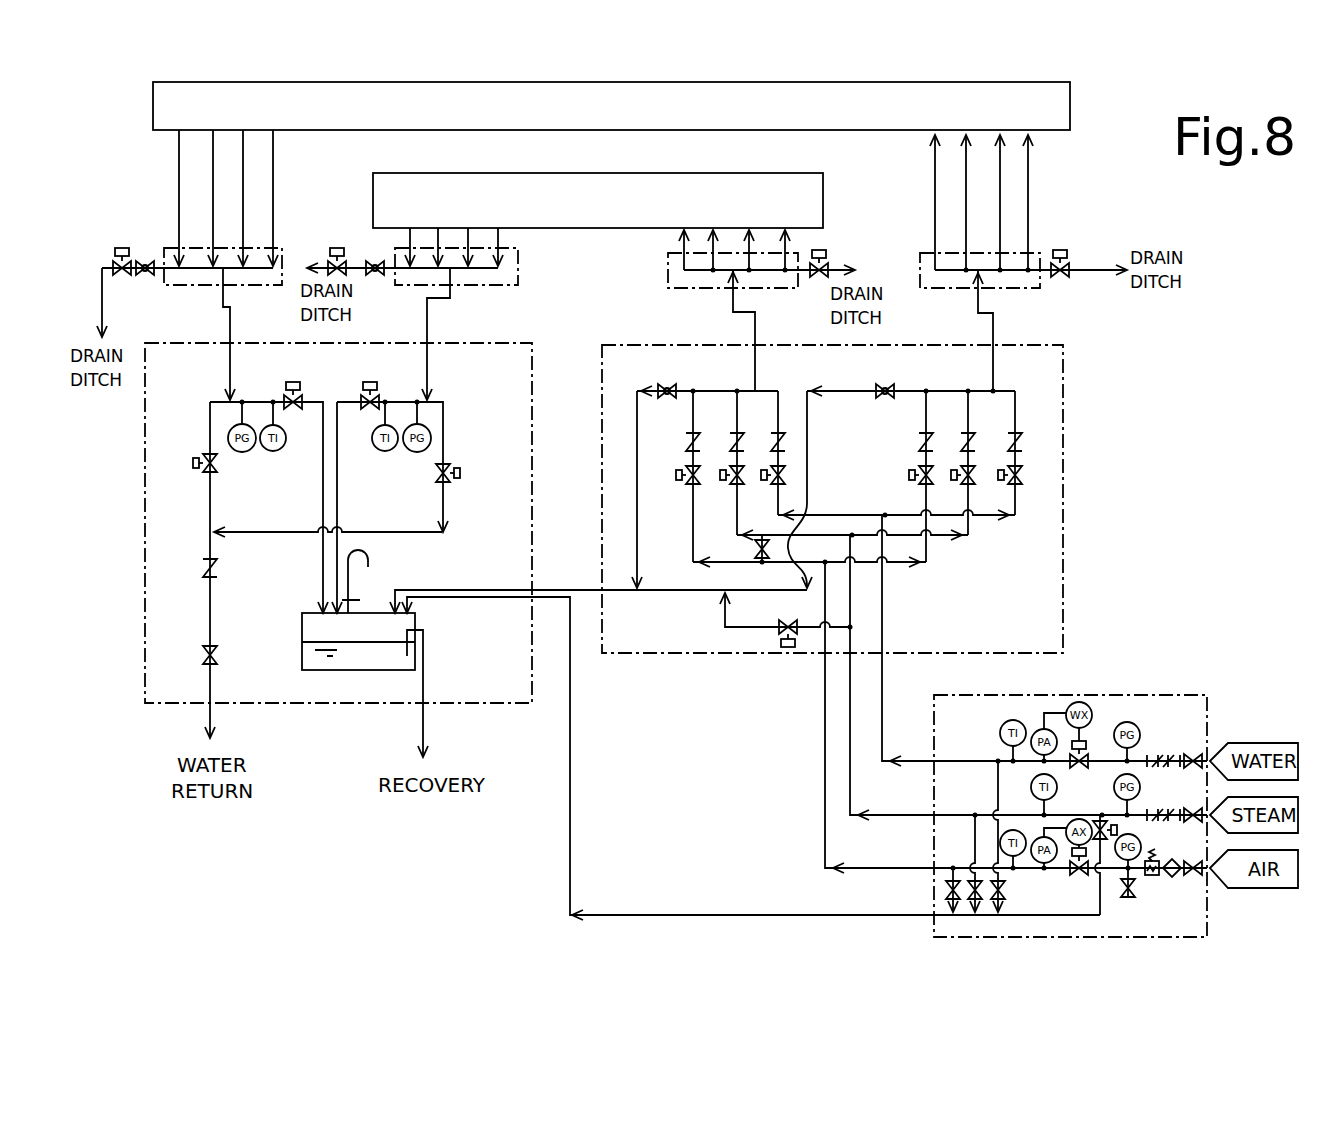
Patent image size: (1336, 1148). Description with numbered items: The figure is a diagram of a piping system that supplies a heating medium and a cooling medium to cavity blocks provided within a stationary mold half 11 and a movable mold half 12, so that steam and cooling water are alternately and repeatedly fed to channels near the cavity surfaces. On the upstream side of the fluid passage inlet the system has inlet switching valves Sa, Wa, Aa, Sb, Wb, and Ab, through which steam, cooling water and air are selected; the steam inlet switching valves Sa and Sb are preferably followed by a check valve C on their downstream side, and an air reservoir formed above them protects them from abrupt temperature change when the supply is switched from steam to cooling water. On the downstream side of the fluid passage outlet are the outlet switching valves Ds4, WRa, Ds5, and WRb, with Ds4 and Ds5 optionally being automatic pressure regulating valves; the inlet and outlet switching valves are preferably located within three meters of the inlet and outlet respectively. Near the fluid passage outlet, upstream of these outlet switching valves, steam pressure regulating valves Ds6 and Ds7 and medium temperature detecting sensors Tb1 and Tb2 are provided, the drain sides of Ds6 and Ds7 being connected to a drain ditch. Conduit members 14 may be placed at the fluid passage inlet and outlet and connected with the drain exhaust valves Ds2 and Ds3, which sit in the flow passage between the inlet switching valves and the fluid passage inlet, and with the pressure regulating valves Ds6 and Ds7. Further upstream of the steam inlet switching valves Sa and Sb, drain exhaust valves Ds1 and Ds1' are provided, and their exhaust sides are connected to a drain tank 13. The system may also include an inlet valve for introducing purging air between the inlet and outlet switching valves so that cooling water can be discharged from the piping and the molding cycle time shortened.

The stationary mold half 11 is at (823, 198).
The movable mold half 12 is at (1071, 111).
The drain tank 13 is at (302, 618).
The conduit member 14 is at (1030, 290).
The medium temperature detecting sensor Tb1 is at (427, 299).
The medium temperature detecting sensor Tb2 is at (223, 298).
The drain exhaust valve Ds1 is at (1131, 870).
The drain exhaust valve Ds1' is at (785, 645).
The drain exhaust valve Ds2 is at (822, 250).
The drain exhaust valve Ds3 is at (1062, 250).
The outlet switching valve Ds4 is at (378, 366).
The outlet switching valve Ds5 is at (299, 366).
The steam pressure regulating valve Ds6 is at (337, 248).
The steam pressure regulating valve Ds7 is at (122, 248).
The outlet switching valve WRa is at (460, 470).
The outlet switching valve WRb is at (192, 458).
The inlet switching valve Aa is at (679, 483).
The steam inlet switching valve Sa is at (723, 483).
The inlet switching valve Wa is at (764, 483).
The inlet switching valve Ab is at (912, 483).
The steam inlet switching valve Sb is at (953, 483).
The inlet switching valve Wb is at (1018, 483).
The check valve C is at (1022, 445).